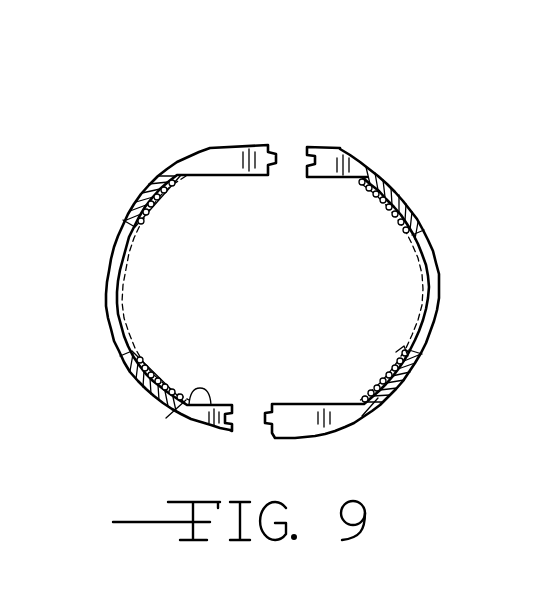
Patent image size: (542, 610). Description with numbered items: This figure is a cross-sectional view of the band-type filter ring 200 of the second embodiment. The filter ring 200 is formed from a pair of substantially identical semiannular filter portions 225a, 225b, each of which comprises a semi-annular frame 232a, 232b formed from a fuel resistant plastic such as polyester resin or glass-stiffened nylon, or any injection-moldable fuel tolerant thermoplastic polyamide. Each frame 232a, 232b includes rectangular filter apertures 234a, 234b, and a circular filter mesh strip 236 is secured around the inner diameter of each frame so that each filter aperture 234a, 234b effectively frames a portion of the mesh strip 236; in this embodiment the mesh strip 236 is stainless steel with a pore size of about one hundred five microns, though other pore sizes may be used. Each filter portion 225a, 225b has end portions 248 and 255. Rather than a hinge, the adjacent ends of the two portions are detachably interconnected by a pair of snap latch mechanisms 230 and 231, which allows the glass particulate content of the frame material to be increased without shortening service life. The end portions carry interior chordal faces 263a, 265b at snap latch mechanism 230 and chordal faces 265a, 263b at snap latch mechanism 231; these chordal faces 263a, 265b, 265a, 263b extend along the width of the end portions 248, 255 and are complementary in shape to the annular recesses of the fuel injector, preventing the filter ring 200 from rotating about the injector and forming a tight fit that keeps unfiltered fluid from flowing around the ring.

The filter ring 200 is at (245, 260).
The semiannular filter portion 225a is at (359, 273).
The semiannular filter portion 225b is at (140, 276).
The snap latch mechanism 230 is at (275, 396).
The snap latch mechanism 231 is at (317, 190).
The semi-annular frame 232a is at (386, 176).
The semi-annular frame 232b is at (127, 216).
The filter aperture 234a is at (428, 232).
The filter aperture 234b is at (112, 277).
The filter mesh strip 236 is at (180, 390).
The end portion 248 is at (220, 168).
The end portion 255 is at (325, 163).
The interior chordal face 263a is at (301, 404).
The chordal face 263b is at (217, 177).
The interior chordal face 265a is at (337, 178).
The interior chordal face 265b is at (174, 405).